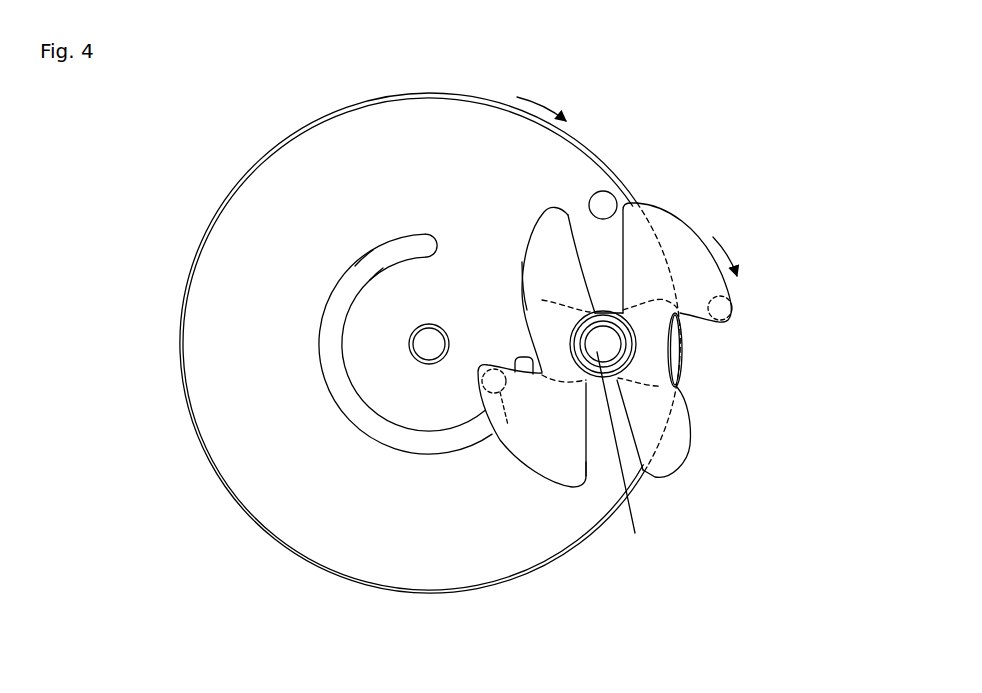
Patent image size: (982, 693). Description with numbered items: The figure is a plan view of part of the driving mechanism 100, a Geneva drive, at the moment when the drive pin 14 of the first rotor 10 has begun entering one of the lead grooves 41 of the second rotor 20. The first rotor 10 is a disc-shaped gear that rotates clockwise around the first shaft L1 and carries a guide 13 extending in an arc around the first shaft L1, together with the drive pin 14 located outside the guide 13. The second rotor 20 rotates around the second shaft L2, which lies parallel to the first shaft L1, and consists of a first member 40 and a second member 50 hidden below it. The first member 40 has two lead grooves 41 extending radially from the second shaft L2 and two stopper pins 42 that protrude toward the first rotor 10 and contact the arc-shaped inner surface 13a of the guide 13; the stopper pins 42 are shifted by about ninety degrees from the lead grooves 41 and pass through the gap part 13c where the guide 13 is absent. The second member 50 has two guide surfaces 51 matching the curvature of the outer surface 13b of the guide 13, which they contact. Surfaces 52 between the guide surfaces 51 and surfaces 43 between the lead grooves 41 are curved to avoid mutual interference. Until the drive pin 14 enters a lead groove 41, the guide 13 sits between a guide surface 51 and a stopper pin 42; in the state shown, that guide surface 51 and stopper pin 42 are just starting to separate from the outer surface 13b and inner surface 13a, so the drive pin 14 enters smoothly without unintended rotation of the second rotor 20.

The first rotor 10 is at (432, 121).
The driving mechanism 100 is at (612, 108).
The guide 13 is at (415, 243).
The inner surface of the guide 13a is at (383, 268).
The outer surface of the guide 13b is at (373, 250).
The gap part 13c is at (468, 271).
The drive pin 14 is at (605, 203).
The second rotor 20 is at (793, 371).
The first member 40 is at (675, 446).
The lead grooves 41 is at (569, 214).
The stopper pins 42 is at (496, 369).
The surfaces between the lead grooves 43 is at (521, 278).
The second member 50 is at (640, 356).
The guide surfaces 51 is at (669, 342).
The surfaces between the guide surfaces 52 is at (606, 313).
The first shaft L1 is at (428, 348).
The second shaft L2 is at (621, 456).